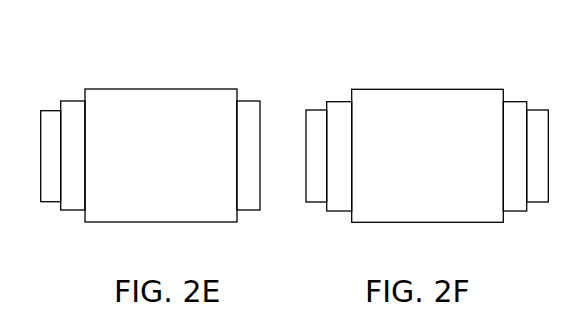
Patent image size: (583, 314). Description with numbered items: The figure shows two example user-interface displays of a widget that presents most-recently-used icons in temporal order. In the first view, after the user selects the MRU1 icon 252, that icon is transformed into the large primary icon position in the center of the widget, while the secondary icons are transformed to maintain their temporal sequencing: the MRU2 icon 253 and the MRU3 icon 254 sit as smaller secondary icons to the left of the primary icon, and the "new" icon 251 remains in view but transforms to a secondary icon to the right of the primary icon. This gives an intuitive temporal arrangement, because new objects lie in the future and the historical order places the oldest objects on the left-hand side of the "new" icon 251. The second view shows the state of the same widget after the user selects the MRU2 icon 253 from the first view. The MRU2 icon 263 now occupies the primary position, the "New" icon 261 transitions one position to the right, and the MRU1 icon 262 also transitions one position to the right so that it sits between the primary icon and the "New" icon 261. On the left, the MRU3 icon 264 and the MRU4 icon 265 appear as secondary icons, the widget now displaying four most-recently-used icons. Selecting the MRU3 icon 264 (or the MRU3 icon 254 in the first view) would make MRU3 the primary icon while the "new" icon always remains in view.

In FIG. 2E, the "new" icon 251 is at (260, 210).
In FIG. 2E, the MRU1 icon 252 is at (210, 222).
In FIG. 2E, the MRU2 icon 253 is at (78, 210).
In FIG. 2E, the MRU3 icon 254 is at (51, 203).
In FIG. 2F, the "New" icon 261 is at (537, 110).
In FIG. 2F, the MRU1 icon 262 is at (512, 102).
In FIG. 2F, the MRU2 icon 263 is at (425, 89).
In FIG. 2F, the MRU3 icon 264 is at (338, 102).
In FIG. 2F, the MRU4 icon 265 is at (310, 110).